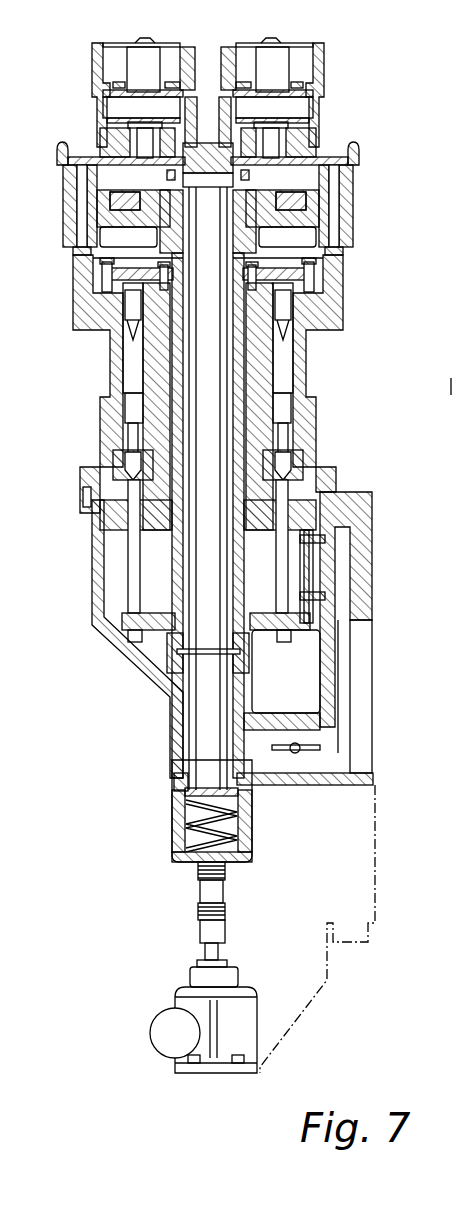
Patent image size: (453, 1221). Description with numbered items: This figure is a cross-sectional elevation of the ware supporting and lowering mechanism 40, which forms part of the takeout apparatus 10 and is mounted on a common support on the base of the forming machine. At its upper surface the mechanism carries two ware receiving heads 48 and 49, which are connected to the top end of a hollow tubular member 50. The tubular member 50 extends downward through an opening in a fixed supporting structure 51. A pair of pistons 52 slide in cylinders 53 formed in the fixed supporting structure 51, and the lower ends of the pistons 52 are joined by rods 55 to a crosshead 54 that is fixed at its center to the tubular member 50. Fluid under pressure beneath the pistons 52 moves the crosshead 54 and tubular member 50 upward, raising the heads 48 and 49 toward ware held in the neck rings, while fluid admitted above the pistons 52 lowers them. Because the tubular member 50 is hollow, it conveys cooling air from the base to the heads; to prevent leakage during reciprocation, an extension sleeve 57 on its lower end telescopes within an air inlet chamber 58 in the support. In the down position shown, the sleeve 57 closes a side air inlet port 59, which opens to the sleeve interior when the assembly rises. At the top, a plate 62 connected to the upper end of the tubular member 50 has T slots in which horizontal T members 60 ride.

The apparatus 10 is at (445, 344).
The ware supporting and lowering mechanism 40 is at (366, 136).
The ware receiving head 48 is at (200, 55).
The ware receiving head 49 is at (322, 62).
The hollow tubular member 50 is at (238, 341).
The fixed supporting structure 51 is at (264, 359).
The piston 52 is at (126, 458).
The cylinder 53 is at (123, 358).
The crosshead 54 is at (300, 642).
The rod 55 is at (130, 561).
The extension sleeve 57 is at (177, 810).
The air inlet chamber 58 is at (176, 784).
The air inlet port 59 is at (343, 762).
The T member 60 is at (76, 198).
The plate 62 is at (322, 213).